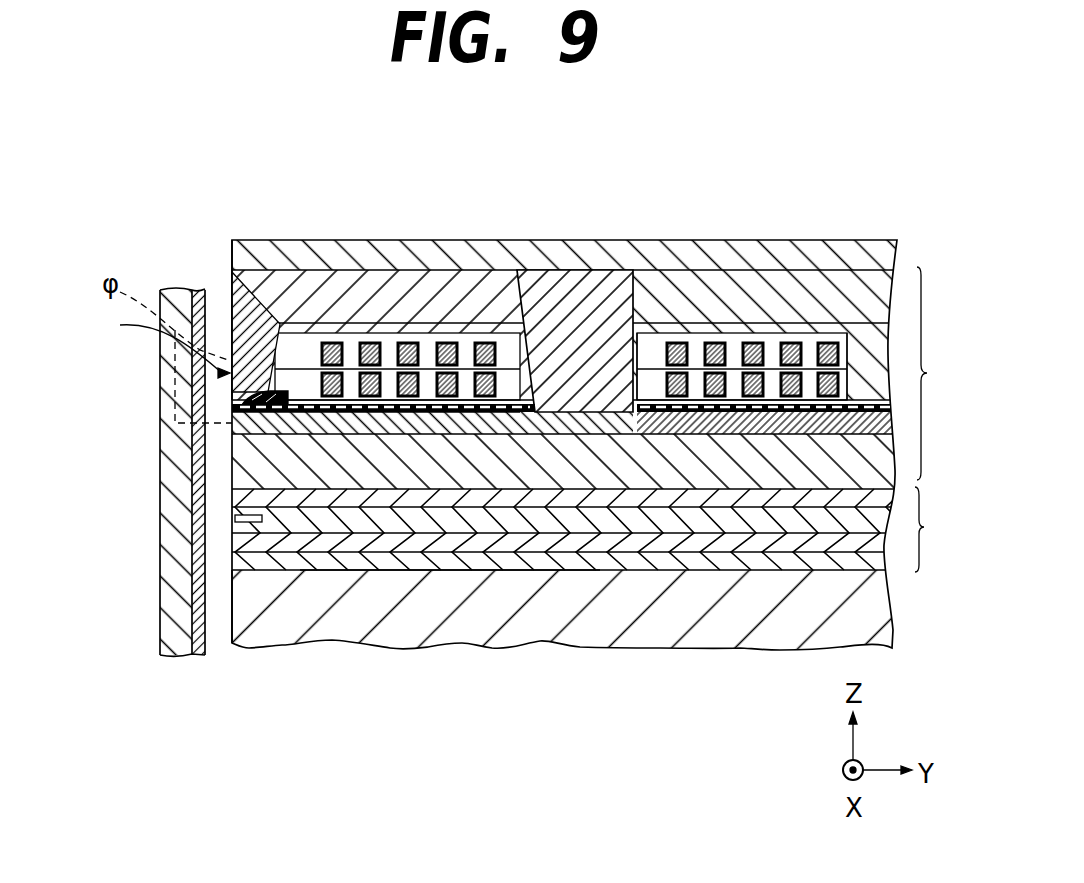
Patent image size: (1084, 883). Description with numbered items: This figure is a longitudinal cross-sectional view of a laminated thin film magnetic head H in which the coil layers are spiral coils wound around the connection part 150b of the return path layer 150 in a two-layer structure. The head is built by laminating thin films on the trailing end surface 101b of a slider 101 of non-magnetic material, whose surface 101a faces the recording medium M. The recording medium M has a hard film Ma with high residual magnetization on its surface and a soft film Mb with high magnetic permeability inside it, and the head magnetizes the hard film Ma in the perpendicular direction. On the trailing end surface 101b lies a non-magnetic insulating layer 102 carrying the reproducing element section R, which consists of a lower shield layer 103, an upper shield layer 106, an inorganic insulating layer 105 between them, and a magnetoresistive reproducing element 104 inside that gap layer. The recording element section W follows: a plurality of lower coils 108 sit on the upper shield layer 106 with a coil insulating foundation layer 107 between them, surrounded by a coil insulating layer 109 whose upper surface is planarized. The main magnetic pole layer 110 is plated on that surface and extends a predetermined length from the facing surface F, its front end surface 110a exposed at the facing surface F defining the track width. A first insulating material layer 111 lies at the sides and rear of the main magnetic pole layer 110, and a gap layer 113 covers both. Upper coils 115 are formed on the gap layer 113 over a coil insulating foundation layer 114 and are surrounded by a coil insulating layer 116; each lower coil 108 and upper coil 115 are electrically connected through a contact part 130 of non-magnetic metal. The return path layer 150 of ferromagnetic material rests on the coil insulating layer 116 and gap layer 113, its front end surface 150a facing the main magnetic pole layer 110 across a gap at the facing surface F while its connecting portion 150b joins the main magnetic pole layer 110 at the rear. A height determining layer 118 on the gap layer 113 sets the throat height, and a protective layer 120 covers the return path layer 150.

The slider 101 is at (758, 622).
The surface of the slider 101a is at (232, 610).
The trailing end surface 101b is at (433, 572).
The non-magnetic insulating layer 102 is at (240, 566).
The lower shield layer 103 is at (240, 548).
The reproducing element 104 is at (240, 520).
The inorganic insulating layer 105 is at (637, 522).
The upper shield layer 106 is at (240, 494).
The coil insulating foundation layer 107 is at (504, 420).
The lower coils 108 is at (407, 402).
The coil insulating layer 109 is at (240, 468).
The main magnetic pole layer 110 is at (242, 426).
The front end surface 110a is at (238, 409).
The first insulating material layer 111 is at (880, 395).
The gap layer 113 is at (243, 400).
The coil insulating foundation layer 114 is at (528, 333).
The upper coils 115 is at (408, 343).
The coil insulating layer 116 is at (306, 333).
The height determining layer 118 is at (266, 392).
The protective layer 120 is at (351, 252).
The contact part 130 is at (680, 345).
The return path layer 150 is at (472, 292).
The front end surface 150a is at (229, 305).
The connecting portion 150b is at (550, 320).
The magnetic head H is at (119, 199).
The recording medium M is at (140, 497).
The hard film Ma is at (198, 650).
The soft film Mb is at (178, 624).
The facing surface F is at (165, 344).
The recording element section W is at (933, 373).
The reproducing element section R is at (929, 529).